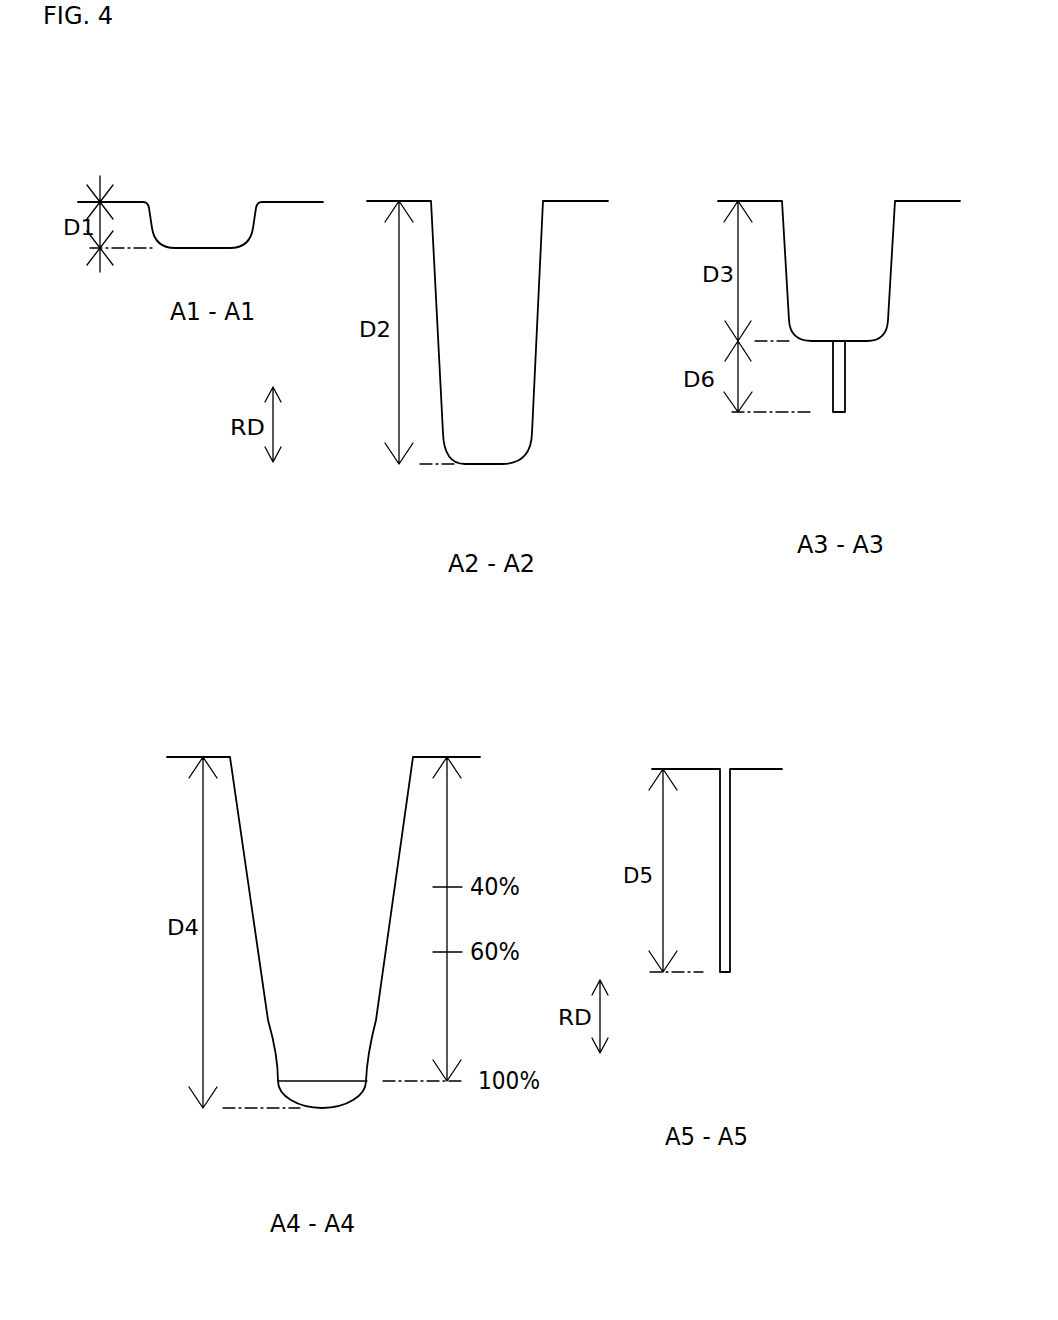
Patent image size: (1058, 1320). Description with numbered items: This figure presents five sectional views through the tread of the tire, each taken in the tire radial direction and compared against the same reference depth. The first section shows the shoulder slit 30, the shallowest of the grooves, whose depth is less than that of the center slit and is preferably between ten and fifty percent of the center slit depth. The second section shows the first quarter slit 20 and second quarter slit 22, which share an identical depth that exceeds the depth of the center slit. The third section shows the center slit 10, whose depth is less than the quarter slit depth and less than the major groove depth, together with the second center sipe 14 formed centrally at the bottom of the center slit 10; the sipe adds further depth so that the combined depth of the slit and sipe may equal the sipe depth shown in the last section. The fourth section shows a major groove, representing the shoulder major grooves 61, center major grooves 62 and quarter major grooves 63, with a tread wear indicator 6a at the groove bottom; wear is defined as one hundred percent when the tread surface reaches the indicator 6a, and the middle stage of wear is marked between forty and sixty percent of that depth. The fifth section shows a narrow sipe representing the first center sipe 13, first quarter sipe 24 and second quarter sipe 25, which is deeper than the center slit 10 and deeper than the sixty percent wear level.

The shoulder slit 30 is at (193, 179).
The first quarter slit 20 is at (487, 292).
The second quarter slit 22 is at (487, 179).
The center slit 10 is at (816, 181).
The second center sipe 14 is at (841, 377).
The shoulder major groove 61 is at (323, 895).
The center major groove 62 is at (323, 895).
The quarter major groove 63 is at (294, 739).
The TWI 6a is at (296, 1079).
The first center sipe 13 is at (761, 870).
The first quarter sipe 24 is at (761, 870).
The second quarter sipe 25 is at (727, 858).